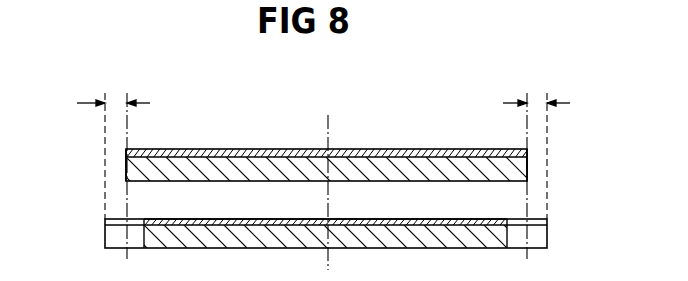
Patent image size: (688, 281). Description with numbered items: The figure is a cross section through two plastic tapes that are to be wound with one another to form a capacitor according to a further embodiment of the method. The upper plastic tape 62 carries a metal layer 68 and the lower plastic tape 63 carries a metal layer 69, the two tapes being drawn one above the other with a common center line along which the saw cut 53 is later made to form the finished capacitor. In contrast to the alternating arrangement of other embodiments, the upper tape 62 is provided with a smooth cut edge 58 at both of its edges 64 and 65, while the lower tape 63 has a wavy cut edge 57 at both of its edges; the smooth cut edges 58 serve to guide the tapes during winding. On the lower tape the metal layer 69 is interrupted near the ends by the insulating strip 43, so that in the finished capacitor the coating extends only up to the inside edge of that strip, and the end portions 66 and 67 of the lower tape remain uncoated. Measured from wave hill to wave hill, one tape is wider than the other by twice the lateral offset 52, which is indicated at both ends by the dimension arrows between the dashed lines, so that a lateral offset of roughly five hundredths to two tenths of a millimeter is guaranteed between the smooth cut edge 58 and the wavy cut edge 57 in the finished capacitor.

The insulating strip 43 is at (165, 218).
The lateral offset 52 is at (113, 103).
The saw cut line 53 is at (328, 123).
The wavy cut edge 57 is at (113, 238).
The smooth cut edge 58 is at (125, 170).
The upper plastic tape 62 is at (450, 160).
The lower plastic tape 63 is at (423, 238).
The edge of upper tape 64 is at (527, 157).
The edge of upper tape 65 is at (125, 157).
The right end portion of lower plate 66 is at (547, 232).
The left end portion of lower plate 67 is at (105, 222).
The metal layer 68 is at (390, 149).
The metal layer 69 is at (355, 218).